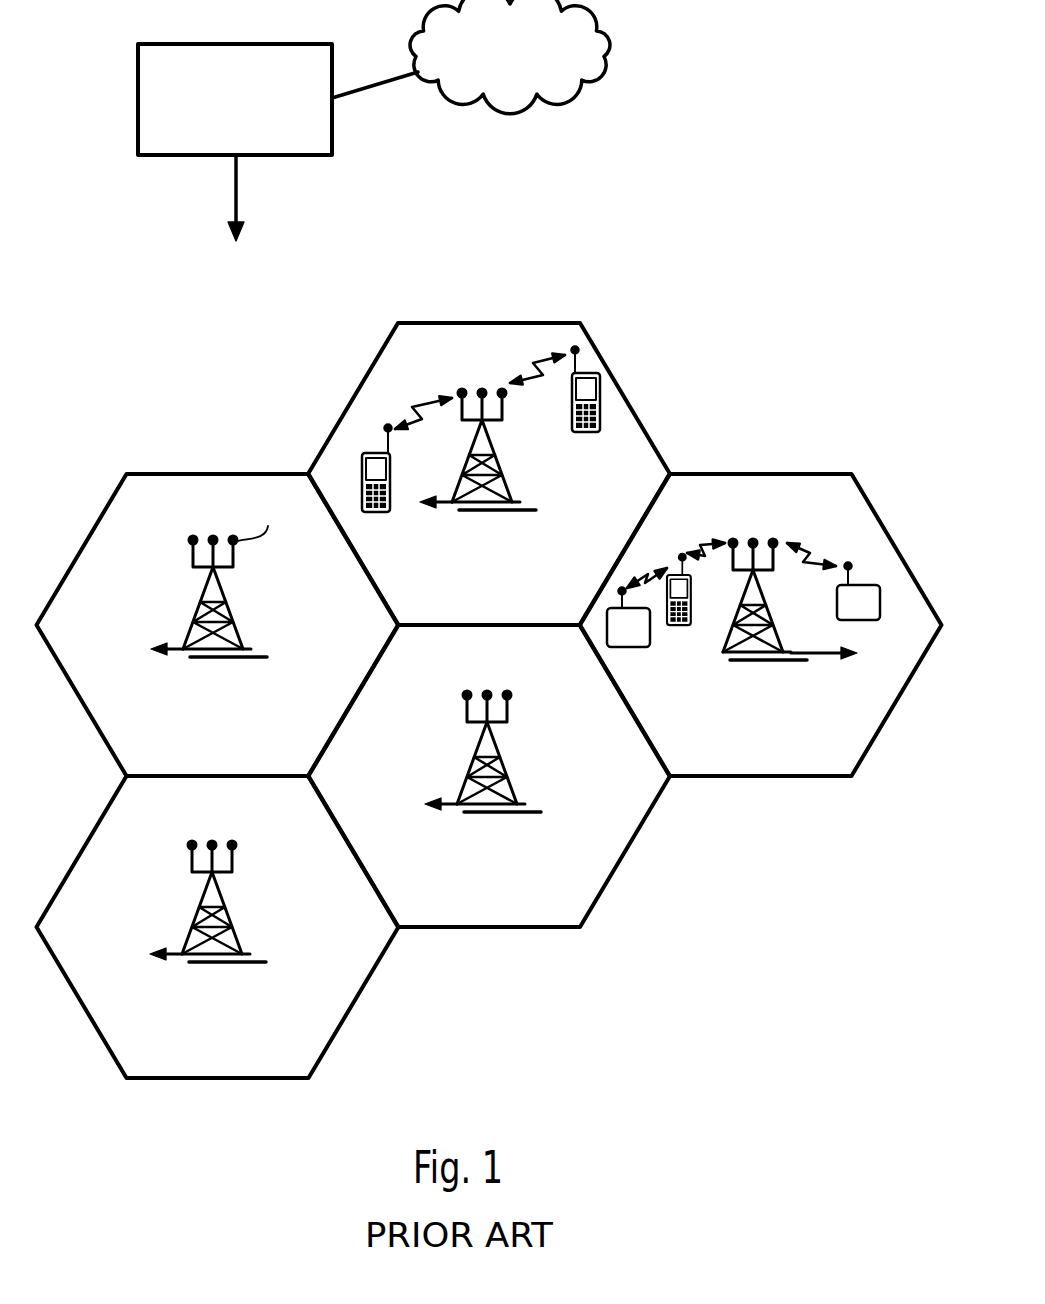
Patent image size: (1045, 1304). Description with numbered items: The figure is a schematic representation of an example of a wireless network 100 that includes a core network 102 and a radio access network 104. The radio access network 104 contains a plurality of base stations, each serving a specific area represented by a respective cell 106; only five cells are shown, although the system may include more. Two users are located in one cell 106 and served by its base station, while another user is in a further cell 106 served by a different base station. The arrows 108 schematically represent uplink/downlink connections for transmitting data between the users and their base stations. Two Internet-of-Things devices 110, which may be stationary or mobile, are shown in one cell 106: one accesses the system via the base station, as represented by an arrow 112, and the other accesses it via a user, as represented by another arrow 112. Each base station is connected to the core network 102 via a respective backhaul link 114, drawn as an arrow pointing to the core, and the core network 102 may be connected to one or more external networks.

The wireless network 100 is at (800, 178).
The core network 102 is at (138, 104).
The radio access network 104 is at (659, 946).
The cell 106 is at (489, 701).
The uplink/downlink connection 108 is at (735, 514).
The IoT device 110 is at (881, 602).
The arrow 112 is at (806, 552).
The backhaul link 114 is at (236, 187).